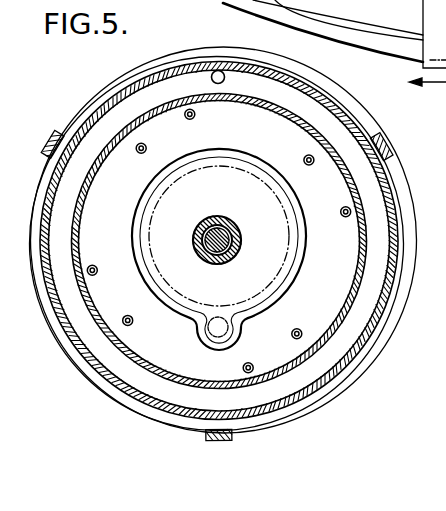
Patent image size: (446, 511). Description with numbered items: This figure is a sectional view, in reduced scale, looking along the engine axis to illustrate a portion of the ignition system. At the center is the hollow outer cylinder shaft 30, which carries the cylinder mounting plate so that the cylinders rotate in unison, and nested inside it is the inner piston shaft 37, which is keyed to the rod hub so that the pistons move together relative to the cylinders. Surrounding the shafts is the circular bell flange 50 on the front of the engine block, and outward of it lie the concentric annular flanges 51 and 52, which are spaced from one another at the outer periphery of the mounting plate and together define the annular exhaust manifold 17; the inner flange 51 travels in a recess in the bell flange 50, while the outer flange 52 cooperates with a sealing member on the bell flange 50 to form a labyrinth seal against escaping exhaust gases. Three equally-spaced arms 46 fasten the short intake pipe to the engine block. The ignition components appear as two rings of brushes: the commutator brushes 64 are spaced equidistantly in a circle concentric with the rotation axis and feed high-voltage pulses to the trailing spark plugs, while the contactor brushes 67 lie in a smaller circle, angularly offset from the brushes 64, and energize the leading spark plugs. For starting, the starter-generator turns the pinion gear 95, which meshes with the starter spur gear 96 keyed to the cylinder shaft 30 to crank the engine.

The exhaust manifold 17 is at (313, 110).
The outer cylinder shaft 30 is at (217, 216).
The inner piston shaft 37 is at (229, 233).
The arms 46 is at (49, 136).
The bell flange 50 is at (219, 234).
The inner annular flange 51 is at (153, 107).
The outer annular flange 52 is at (175, 62).
The commutator brushes 64 is at (190, 119).
The contactor brushes 67 is at (308, 165).
The pinion gear 95 is at (230, 322).
The starter spur gear 96 is at (160, 290).